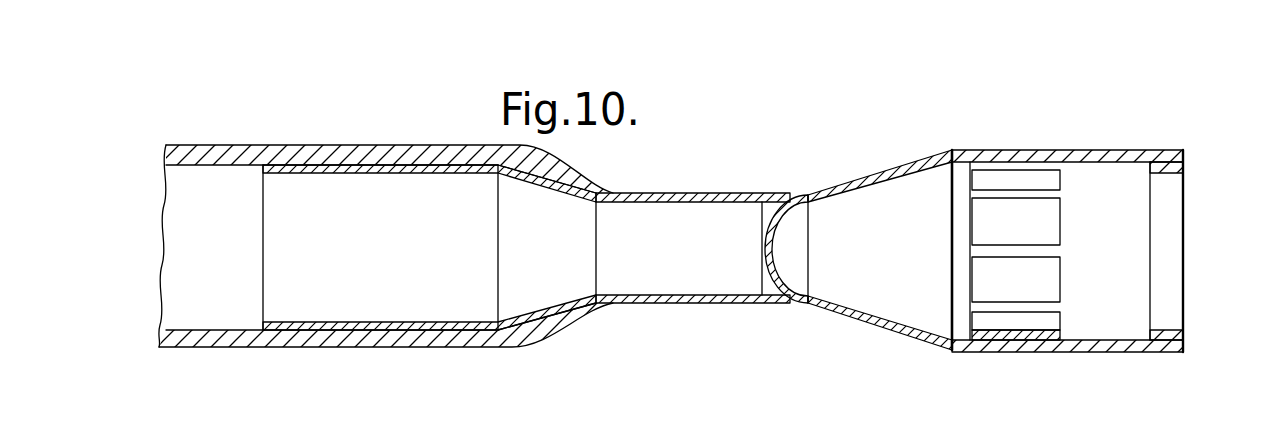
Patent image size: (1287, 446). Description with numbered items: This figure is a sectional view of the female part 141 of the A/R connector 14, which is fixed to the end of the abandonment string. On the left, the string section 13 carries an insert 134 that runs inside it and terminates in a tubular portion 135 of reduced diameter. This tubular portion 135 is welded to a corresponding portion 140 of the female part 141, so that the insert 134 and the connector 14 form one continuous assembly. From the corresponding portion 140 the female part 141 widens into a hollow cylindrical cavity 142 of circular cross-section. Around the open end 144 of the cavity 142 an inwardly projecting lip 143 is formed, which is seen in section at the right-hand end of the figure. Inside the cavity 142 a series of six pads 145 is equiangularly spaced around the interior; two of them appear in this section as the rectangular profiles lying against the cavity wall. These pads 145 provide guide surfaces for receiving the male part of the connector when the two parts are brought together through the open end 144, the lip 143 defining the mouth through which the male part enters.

The first pipe section 13 is at (438, 358).
The A/R connector 14 is at (1097, 260).
The insert 134 is at (383, 182).
The tubular portion 135 is at (697, 304).
The corresponding portion 140 is at (791, 303).
The female part 141 is at (897, 172).
The hollow cylindrical cavity 142 is at (1123, 297).
The inwardly projecting lip 143 is at (1172, 176).
The open end 144 is at (1162, 257).
The pads 145 is at (1025, 218).